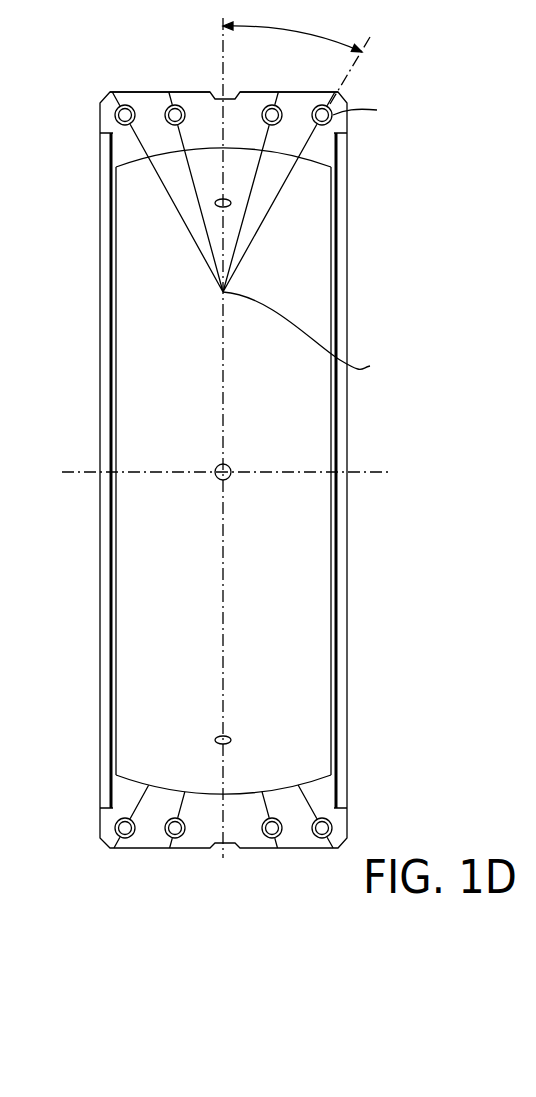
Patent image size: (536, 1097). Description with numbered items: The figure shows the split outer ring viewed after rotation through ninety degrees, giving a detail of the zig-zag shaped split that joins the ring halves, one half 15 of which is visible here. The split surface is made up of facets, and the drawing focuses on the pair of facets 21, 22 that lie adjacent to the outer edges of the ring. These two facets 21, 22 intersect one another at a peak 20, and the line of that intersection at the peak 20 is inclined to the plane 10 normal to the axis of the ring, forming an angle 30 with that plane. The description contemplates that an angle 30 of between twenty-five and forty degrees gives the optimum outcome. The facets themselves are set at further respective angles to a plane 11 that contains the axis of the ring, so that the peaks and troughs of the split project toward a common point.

The plane normal to the axis of the ring 10 is at (225, 372).
The plane containing the axis of the ring 11 is at (72, 470).
The half of the split outer ring 15 is at (347, 608).
The peak 20 is at (330, 106).
The facet 21 is at (312, 98).
The facet 22 is at (343, 130).
The angle 30 is at (318, 33).